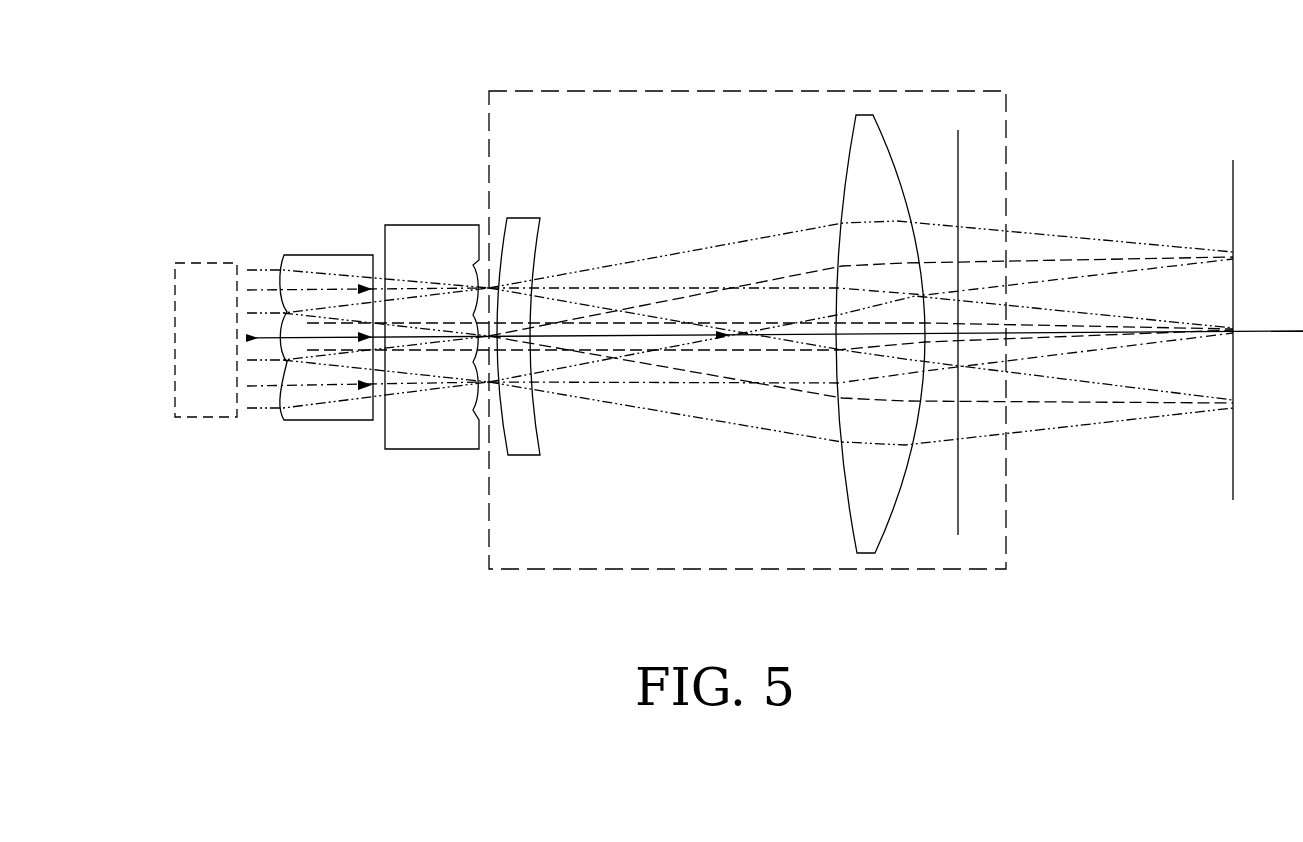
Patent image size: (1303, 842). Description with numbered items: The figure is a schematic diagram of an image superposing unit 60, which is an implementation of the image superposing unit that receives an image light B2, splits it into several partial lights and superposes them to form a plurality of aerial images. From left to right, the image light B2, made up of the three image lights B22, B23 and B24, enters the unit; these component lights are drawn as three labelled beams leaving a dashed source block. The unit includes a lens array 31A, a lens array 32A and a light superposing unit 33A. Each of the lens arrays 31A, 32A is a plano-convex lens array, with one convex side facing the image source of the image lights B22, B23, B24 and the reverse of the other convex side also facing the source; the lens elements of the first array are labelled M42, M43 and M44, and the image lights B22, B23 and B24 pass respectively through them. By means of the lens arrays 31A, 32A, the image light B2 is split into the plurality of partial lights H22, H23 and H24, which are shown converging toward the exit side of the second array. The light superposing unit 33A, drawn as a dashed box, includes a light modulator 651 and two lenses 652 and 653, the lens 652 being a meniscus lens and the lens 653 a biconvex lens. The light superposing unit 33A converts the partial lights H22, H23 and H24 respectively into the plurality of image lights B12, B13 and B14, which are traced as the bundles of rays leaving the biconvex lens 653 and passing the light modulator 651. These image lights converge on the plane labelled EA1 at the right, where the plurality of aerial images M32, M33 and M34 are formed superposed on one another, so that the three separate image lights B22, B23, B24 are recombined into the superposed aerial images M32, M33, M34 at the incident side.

The image superposing unit 60 is at (362, 86).
The image light B2 is at (204, 262).
The image light B22 is at (337, 289).
The image light B23 is at (744, 337).
The image light B24 is at (337, 385).
The lens element of lens array M42 is at (276, 280).
The lens element of lens array M43 is at (268, 322).
The aerial image M44 is at (270, 399).
The lens array 31A is at (337, 263).
The lens array 32A is at (438, 243).
The light superposing unit 33A is at (600, 90).
The partial light H22 is at (484, 312).
The partial light H23 is at (492, 307).
The partial light H24 is at (486, 430).
The lens 652 is at (522, 237).
The lens 653 is at (868, 188).
The light modulator 651 is at (958, 168).
The aerial image M32 is at (1154, 269).
The aerial image M33 is at (1154, 269).
The illuminated region M34 is at (1154, 269).
The illumination target plane EA1 is at (1167, 57).
The image light B12 is at (1042, 233).
The image light B13 is at (1011, 263).
The image light B14 is at (1028, 433).